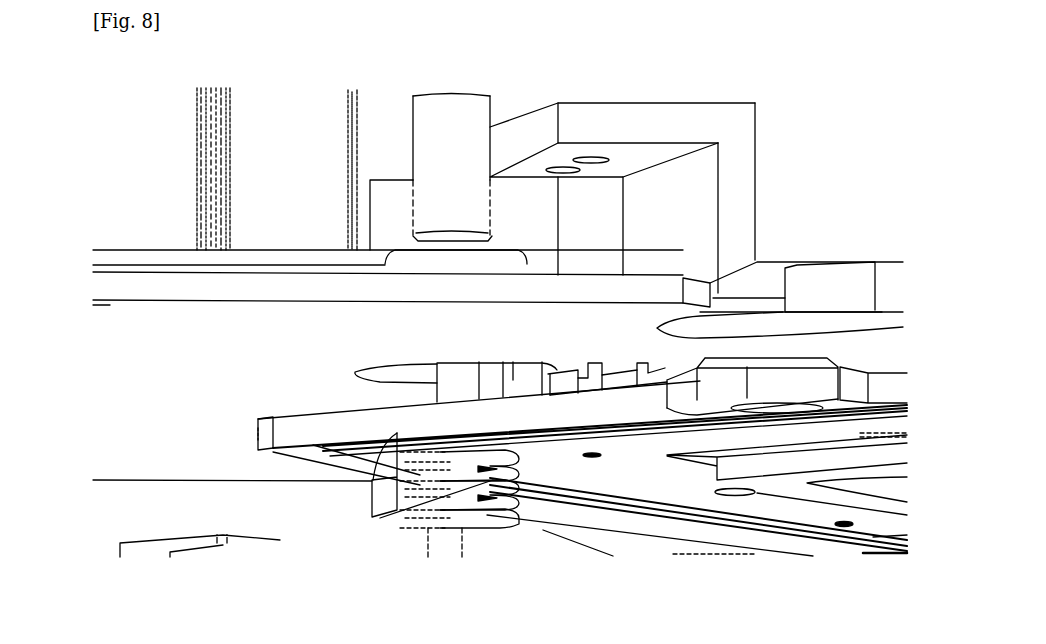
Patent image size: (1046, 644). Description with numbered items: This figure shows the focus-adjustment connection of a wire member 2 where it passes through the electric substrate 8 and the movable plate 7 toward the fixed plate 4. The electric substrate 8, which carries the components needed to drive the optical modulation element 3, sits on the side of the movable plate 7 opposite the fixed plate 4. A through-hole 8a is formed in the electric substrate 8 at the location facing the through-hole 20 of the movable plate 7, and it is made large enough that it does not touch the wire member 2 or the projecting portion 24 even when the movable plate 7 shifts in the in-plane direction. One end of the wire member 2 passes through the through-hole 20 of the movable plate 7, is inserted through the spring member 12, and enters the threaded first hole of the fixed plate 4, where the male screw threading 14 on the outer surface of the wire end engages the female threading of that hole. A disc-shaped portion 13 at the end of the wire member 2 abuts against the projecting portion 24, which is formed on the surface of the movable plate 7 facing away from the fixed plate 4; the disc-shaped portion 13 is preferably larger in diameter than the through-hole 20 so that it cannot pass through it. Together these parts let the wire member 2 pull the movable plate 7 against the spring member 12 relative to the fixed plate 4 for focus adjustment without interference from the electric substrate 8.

The wire member 2 is at (415, 125).
The optical modulation element 3 is at (868, 487).
The fixed plate 4 is at (277, 537).
The movable plate 7 is at (332, 410).
The electric substrate 8 is at (681, 277).
The through-hole 8a is at (392, 363).
The spring member 12 is at (430, 505).
The disc-shaped portion 13 is at (503, 268).
The male screw threading 14 is at (527, 503).
The through-hole 20 is at (370, 505).
The projecting portion 24 is at (512, 370).